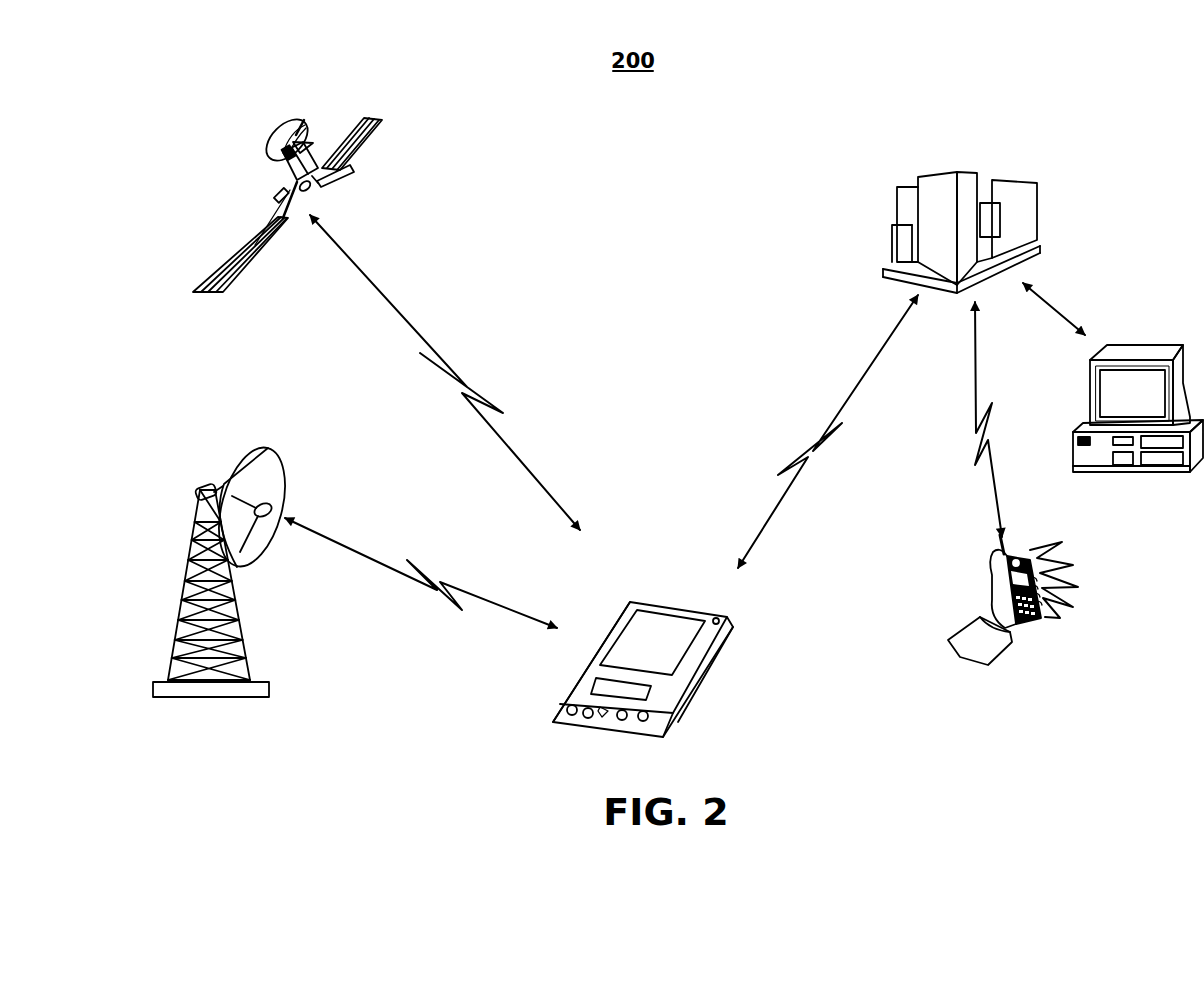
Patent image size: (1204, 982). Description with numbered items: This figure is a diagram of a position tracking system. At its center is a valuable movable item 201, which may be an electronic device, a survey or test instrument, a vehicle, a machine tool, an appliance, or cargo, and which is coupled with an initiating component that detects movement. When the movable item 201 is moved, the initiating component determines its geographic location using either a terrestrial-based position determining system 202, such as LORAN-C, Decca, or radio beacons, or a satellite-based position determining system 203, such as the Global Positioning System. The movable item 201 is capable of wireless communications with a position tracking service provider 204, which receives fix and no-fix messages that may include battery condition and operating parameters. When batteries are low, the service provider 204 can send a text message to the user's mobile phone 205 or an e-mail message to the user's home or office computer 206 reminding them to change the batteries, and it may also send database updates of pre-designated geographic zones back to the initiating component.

The valuable movable item 201 is at (663, 598).
The terrestrial-based position determining system 202 is at (228, 463).
The satellite-based position determining system 203 is at (268, 133).
The position tracking service provider 204 is at (888, 188).
The mobile phone 205 is at (1035, 636).
The computer 206 is at (1140, 335).